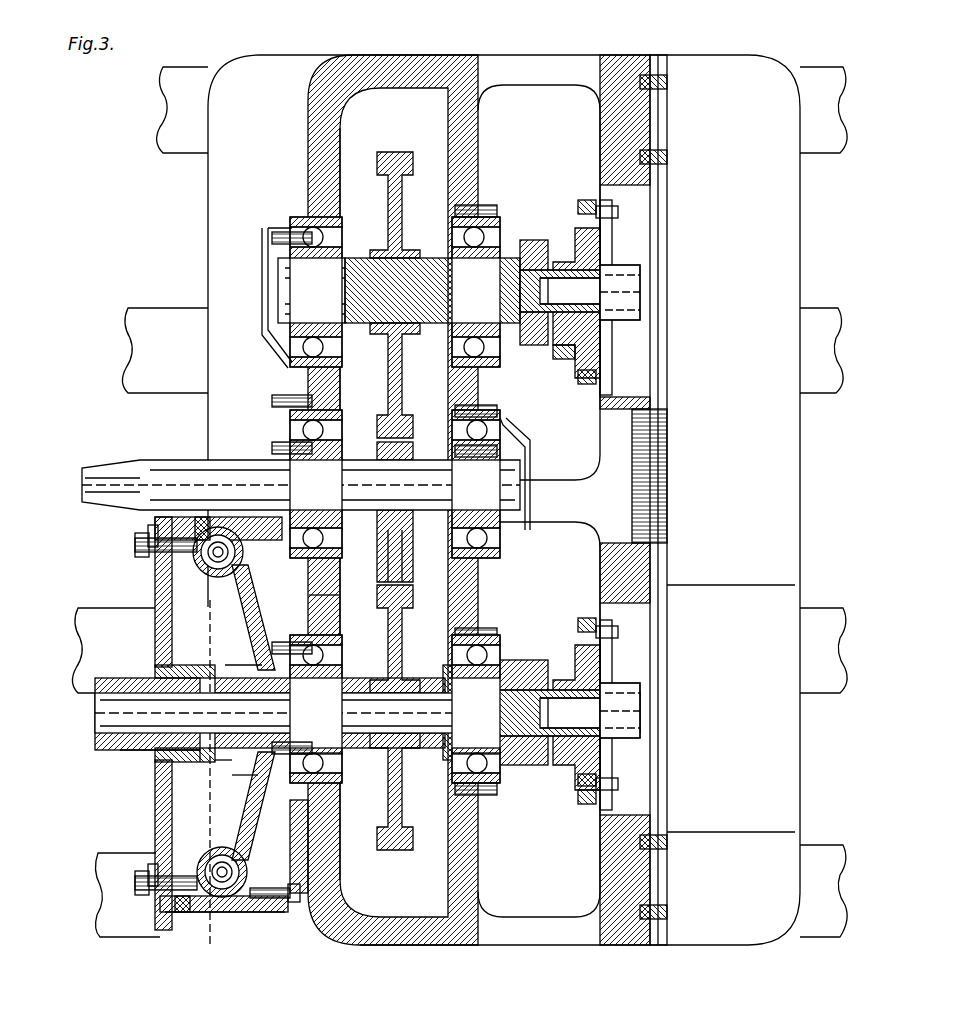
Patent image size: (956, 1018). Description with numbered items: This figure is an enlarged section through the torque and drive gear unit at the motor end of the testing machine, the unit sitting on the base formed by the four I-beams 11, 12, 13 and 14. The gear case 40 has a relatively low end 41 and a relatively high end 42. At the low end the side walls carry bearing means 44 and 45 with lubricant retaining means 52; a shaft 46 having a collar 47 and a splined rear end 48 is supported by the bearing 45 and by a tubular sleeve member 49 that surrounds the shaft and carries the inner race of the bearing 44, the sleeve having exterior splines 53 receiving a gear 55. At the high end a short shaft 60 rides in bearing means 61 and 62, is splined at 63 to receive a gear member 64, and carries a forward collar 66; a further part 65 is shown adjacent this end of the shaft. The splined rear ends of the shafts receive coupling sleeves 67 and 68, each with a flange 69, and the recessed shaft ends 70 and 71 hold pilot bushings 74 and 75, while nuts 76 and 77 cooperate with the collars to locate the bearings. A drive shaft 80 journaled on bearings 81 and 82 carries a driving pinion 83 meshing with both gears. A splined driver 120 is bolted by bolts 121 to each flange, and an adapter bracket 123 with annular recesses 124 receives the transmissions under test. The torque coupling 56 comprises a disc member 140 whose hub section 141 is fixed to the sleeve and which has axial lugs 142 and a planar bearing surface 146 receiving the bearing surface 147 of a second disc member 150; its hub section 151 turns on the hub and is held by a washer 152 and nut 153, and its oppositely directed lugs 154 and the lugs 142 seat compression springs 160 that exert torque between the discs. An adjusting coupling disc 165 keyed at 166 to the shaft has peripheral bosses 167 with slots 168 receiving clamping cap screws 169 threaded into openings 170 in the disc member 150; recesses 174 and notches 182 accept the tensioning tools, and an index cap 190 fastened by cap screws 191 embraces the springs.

The I-beam base member 11 is at (105, 937).
The I-beam base member 12 is at (96, 614).
The I-beam base member 13 is at (164, 318).
The I-beam base member 14 is at (178, 153).
The gear case 40 is at (336, 940).
The low end of gear case 41 is at (470, 940).
The high end of gear case 42 is at (308, 135).
The bearing means 44 is at (340, 628).
The bearing means 45 is at (493, 808).
The shaft 46 is at (367, 713).
The collar 47 is at (446, 690).
The splined rear end 48 is at (540, 665).
The tubular sleeve member 49 is at (350, 754).
The lubricant retaining means 52 is at (342, 656).
The exterior splines 53 is at (135, 763).
The gear 55 is at (395, 731).
The torque coupling 56 is at (148, 795).
The short shaft 60 is at (439, 324).
The bearing means 61 is at (337, 228).
The bearing means 62 is at (488, 205).
The splined section 63 is at (440, 250).
The gear member 64 is at (396, 155).
The coupling flange 65 is at (513, 262).
The collar 66 is at (270, 247).
The coupling sleeve 67 is at (559, 670).
The coupling sleeve 68 is at (556, 248).
The flange 69 is at (584, 200).
The recess 70 is at (555, 772).
The recess 71 is at (531, 320).
The pilot bushing 74 is at (645, 706).
The pilot bushing 75 is at (561, 352).
The nut 76 is at (612, 656).
The nut 77 is at (612, 240).
The drive shaft 80 is at (301, 485).
The bearing 81 is at (335, 421).
The bearing 82 is at (508, 423).
The driving pinion 83 is at (414, 548).
The splined driver 120 is at (640, 267).
The bolts 121 is at (618, 213).
The adapter bracket 123 is at (605, 86).
The annular recesses 124 is at (667, 98).
The disc member 140 is at (340, 822).
The hub section 141 is at (330, 713).
The axially directed lugs 142 is at (246, 568).
The planar bearing surface 146 is at (258, 818).
The bearing surface 147 is at (230, 613).
The second coupling disc member 150 is at (225, 642).
The hub section 151 is at (226, 660).
The washer 152 is at (216, 789).
The nut 153 is at (203, 760).
The axially directed lugs 154 is at (212, 517).
The compression springs 160 is at (238, 535).
The adjusting coupling disc 165 is at (160, 572).
The key 166 is at (122, 680).
The peripheral bosses 167 is at (148, 530).
The slots 168 is at (135, 545).
The clamping cap screws 169 is at (135, 556).
The openings 170 is at (203, 517).
The recesses 174 is at (160, 906).
The notches 182 is at (190, 914).
The index cap 190 is at (256, 900).
The cap screws 191 is at (282, 904).